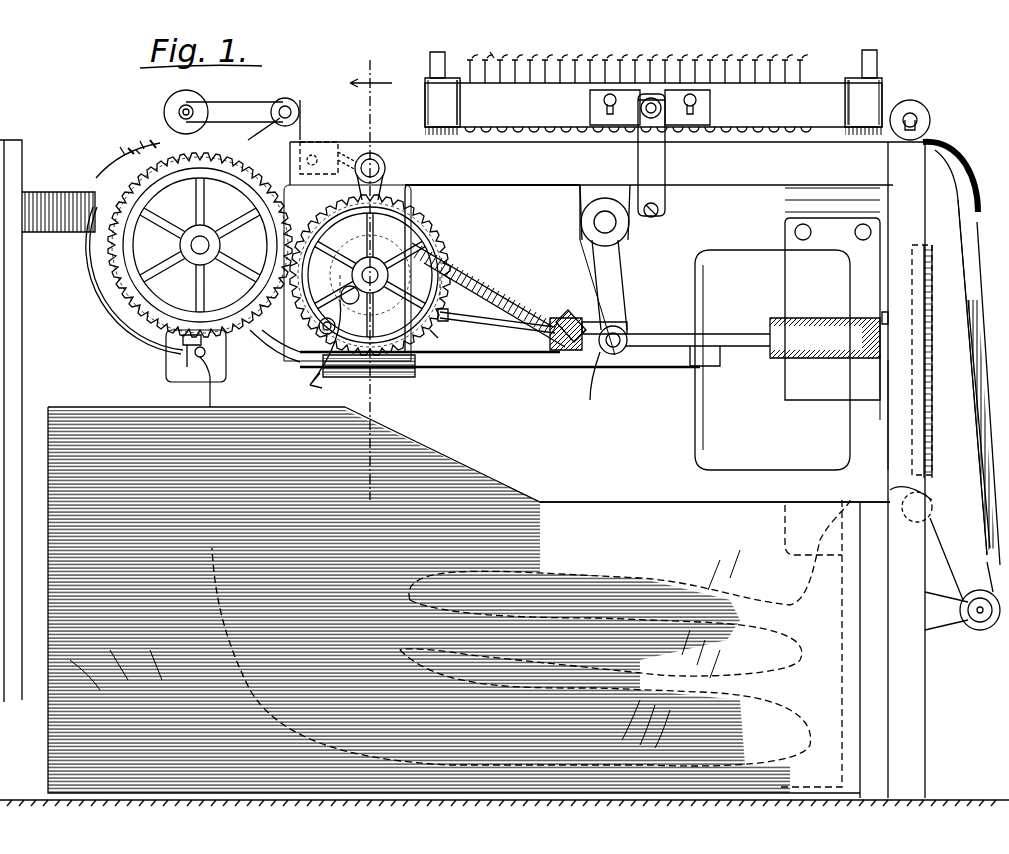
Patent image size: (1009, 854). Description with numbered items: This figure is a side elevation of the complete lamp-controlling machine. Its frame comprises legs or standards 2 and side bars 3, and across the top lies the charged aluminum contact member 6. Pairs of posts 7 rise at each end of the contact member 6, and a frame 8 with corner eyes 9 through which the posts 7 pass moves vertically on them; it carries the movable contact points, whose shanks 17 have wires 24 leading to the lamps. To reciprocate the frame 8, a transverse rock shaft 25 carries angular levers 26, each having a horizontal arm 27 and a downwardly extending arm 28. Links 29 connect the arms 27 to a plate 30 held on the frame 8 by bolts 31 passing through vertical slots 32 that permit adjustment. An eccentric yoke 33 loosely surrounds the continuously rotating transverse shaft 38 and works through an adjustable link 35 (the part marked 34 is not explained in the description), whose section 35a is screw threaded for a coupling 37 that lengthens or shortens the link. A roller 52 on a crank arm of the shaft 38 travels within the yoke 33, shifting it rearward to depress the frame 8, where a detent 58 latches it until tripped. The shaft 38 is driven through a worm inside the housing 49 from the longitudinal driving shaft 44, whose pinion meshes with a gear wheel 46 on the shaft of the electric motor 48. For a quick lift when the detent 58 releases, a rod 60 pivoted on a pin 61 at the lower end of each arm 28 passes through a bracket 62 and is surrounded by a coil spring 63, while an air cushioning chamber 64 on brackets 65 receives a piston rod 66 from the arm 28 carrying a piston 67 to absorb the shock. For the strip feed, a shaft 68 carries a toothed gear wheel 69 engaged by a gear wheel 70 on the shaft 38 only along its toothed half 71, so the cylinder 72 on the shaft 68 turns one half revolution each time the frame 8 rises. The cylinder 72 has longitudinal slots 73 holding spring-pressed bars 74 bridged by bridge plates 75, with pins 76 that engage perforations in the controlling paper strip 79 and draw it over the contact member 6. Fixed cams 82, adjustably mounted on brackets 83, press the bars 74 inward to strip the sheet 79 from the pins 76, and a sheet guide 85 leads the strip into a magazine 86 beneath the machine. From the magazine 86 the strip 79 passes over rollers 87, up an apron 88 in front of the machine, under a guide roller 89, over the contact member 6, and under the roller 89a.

The legs or standards 2 is at (927, 700).
The side bars 3 is at (492, 167).
The contact member 6 is at (536, 128).
The posts 7 is at (448, 70).
The frame 8 is at (808, 92).
The eyes 9 is at (653, 106).
The shank 17 is at (752, 58).
The wire 24 is at (496, 45).
The shaft 25 is at (628, 235).
The angular levers 26 is at (564, 302).
The arm 27 is at (604, 220).
The arm 28 is at (626, 300).
The links 29 is at (660, 210).
The plate 30 is at (676, 95).
The bolts 31 is at (700, 105).
The slots 32 is at (600, 108).
The eccentric yokes 33 is at (405, 190).
The crank pin 34 is at (428, 336).
The link 35 is at (500, 330).
The section 35a is at (617, 386).
The coupling 37 is at (562, 352).
The transverse shaft 38 is at (390, 280).
The driving shaft 44 is at (540, 367).
The gear wheel 46 is at (940, 298).
The electric motor 48 is at (772, 360).
The housing 49 is at (378, 372).
The roller 52 is at (308, 387).
The detent 58 is at (325, 338).
The rod 60 is at (604, 310).
The pin 61 is at (608, 355).
The bracket 62 is at (325, 150).
The coil spring 63 is at (505, 275).
The air cushioning chamber 64 is at (872, 360).
The brackets 65 is at (888, 345).
The piston rod 66 is at (750, 338).
The piston 67 is at (830, 320).
The shaft 68 is at (110, 262).
The gear wheel 69 is at (262, 340).
The gear wheel 70 is at (425, 131).
The teeth 71 is at (405, 376).
The cylinder 72 is at (258, 318).
The slots 73 is at (270, 690).
The rod 74 is at (130, 152).
The bridge plate 75 is at (152, 150).
The pins 76 is at (137, 150).
The controlling strip 79 is at (108, 170).
The fixed cams 82 is at (190, 350).
The brackets 83 is at (176, 380).
The sheet guide 85 is at (112, 300).
The magazine 86 is at (630, 493).
The rollers 87 is at (945, 492).
The apron 88 is at (978, 400).
The guide roller 89 is at (916, 103).
The roller 89a is at (208, 103).